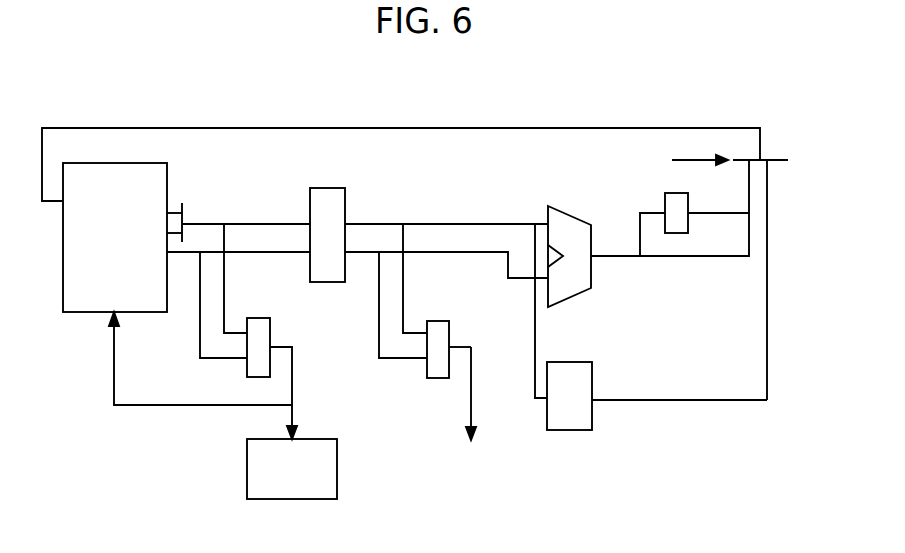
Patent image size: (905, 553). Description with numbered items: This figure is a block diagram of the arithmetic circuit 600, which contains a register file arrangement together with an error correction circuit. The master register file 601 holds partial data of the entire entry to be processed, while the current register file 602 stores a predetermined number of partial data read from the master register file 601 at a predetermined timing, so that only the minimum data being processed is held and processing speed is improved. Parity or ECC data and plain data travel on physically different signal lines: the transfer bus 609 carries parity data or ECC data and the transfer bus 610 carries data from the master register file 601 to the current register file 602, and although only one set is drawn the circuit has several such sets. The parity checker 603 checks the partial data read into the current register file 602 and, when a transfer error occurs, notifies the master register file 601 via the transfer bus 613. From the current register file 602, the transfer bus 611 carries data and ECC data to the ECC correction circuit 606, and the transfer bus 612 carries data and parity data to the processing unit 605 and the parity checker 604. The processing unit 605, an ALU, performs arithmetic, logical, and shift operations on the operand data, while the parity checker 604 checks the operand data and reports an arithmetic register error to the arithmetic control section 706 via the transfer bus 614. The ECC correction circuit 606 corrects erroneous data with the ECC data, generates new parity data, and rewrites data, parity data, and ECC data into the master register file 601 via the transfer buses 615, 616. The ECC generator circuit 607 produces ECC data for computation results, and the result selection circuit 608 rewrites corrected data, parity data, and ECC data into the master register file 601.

The arithmetic circuit 600 is at (675, 77).
The master register file 601 is at (168, 185).
The current register file 602 is at (346, 200).
The parity checker 603 is at (271, 332).
The parity checker 604 is at (450, 332).
The processing unit 605 is at (576, 218).
The ECC correction circuit 606 is at (593, 364).
The ECC generator circuit 607 is at (689, 203).
The result selection circuit 608 is at (776, 159).
The transfer bus 609 is at (257, 223).
The transfer bus 610 is at (255, 253).
The transfer bus 611 is at (440, 221).
The transfer bus 612 is at (440, 253).
The transfer bus 613 is at (198, 406).
The transfer bus 614 is at (472, 393).
The transfer bus 615 is at (690, 401).
The transfer bus 616 is at (452, 128).
The arithmetic control section 706 is at (338, 468).